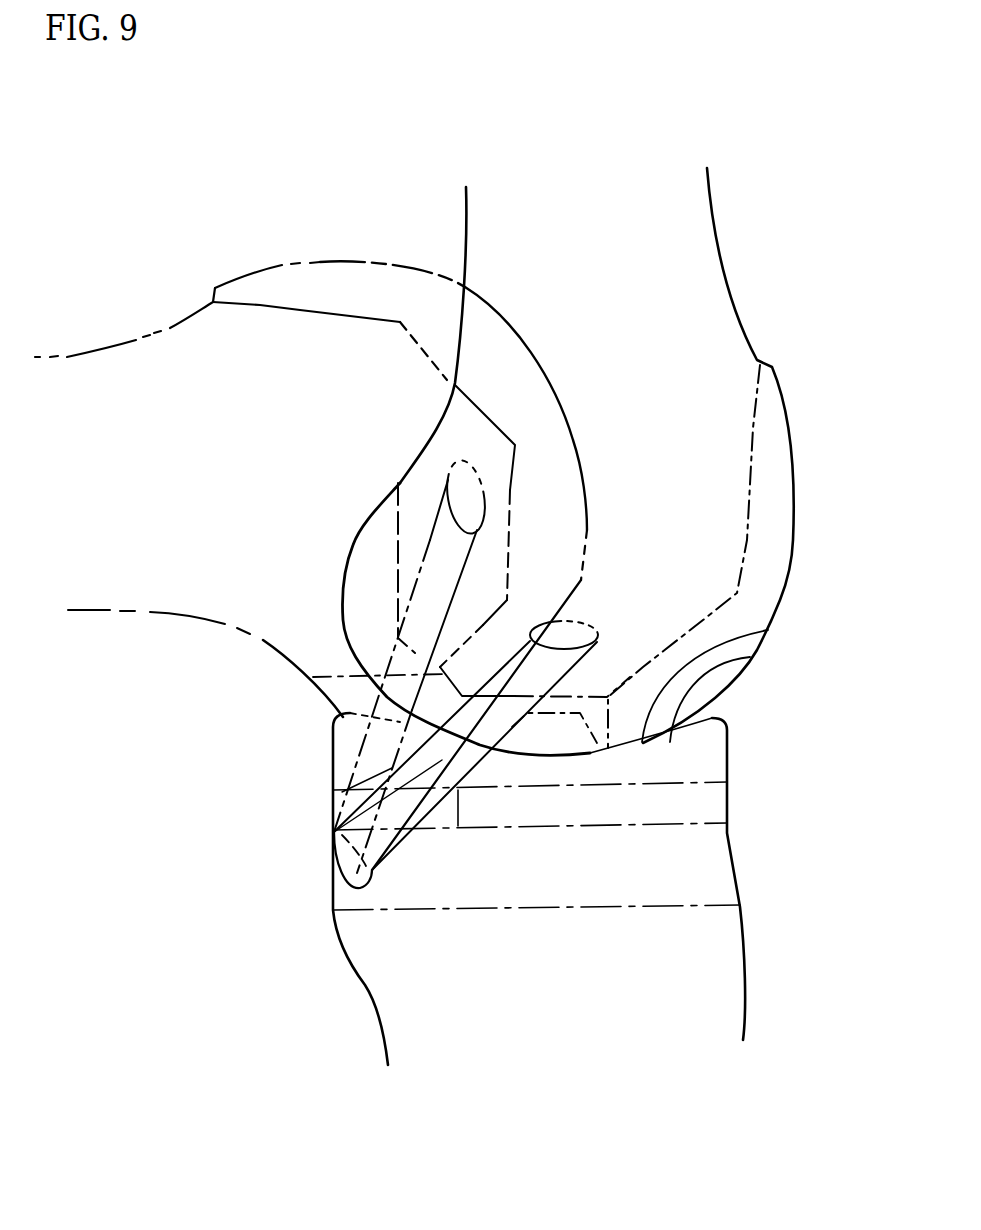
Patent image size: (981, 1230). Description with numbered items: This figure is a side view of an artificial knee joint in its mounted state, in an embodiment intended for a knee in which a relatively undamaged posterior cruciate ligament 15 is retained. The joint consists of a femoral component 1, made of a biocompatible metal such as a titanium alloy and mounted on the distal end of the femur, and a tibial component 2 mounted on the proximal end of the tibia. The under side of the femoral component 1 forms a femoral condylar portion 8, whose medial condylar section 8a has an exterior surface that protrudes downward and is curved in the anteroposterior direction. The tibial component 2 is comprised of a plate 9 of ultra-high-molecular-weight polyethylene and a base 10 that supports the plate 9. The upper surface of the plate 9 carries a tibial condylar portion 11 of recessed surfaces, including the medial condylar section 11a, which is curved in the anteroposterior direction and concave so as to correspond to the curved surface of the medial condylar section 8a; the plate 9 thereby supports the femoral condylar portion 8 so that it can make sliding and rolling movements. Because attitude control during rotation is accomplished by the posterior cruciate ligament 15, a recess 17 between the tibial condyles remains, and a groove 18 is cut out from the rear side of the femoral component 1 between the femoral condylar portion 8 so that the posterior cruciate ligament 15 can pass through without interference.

The femoral component 1 is at (805, 425).
The tibial component 2 is at (752, 722).
The femoral condylar portion 8 is at (362, 578).
The medial condylar section 8a is at (350, 633).
The plate 9 is at (718, 762).
The base 10 is at (717, 805).
The tibial condylar portion 11 is at (752, 660).
The medial condylar section 11a is at (770, 631).
The posterior cruciate ligament 15 is at (333, 793).
The recess between the tibial condyles 17 is at (717, 875).
The groove 18 is at (352, 745).